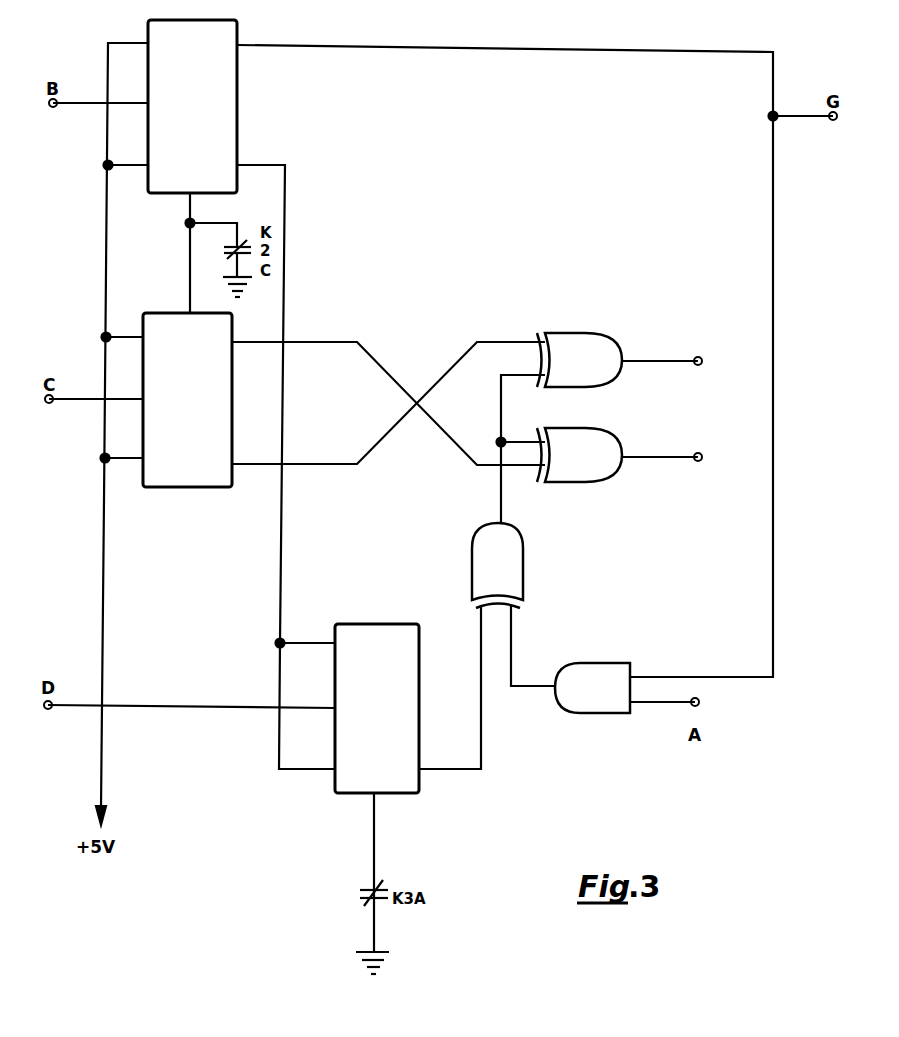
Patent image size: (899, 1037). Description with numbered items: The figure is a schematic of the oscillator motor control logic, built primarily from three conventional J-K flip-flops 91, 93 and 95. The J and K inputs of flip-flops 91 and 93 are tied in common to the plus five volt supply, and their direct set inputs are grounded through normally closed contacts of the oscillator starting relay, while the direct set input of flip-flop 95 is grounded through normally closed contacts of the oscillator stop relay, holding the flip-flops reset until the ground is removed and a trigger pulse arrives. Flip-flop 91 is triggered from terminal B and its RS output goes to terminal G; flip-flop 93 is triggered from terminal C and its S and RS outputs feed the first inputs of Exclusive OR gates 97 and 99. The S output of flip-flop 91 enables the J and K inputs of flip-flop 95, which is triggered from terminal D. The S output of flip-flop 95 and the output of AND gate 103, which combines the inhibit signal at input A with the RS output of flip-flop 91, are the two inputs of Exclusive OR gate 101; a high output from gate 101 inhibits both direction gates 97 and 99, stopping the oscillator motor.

The J-K flip-flop 91 is at (238, 107).
The J-K flip-flop 93 is at (233, 404).
The J-K flip-flop 95 is at (420, 712).
The Exclusive OR gate 97 is at (598, 333).
The Exclusive OR gate 99 is at (603, 430).
The Exclusive OR gate 101 is at (518, 545).
The AND gate 103 is at (629, 664).